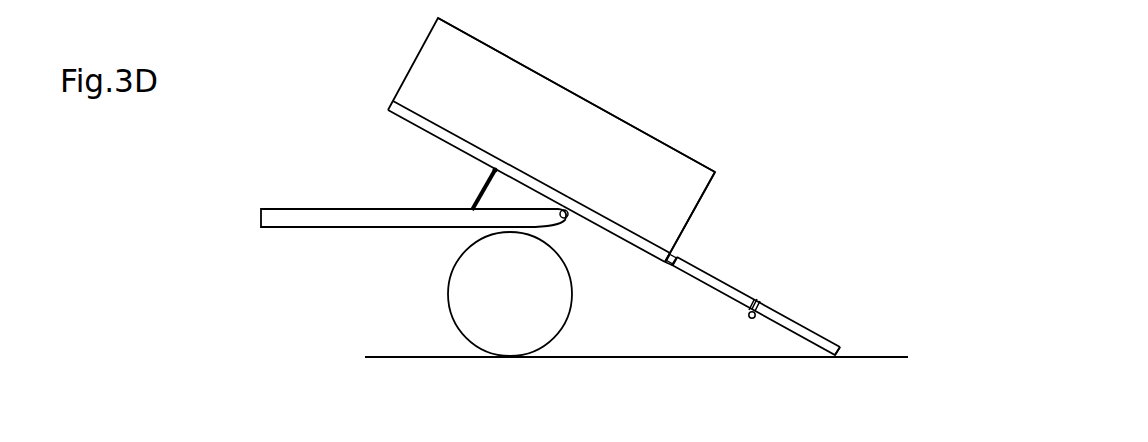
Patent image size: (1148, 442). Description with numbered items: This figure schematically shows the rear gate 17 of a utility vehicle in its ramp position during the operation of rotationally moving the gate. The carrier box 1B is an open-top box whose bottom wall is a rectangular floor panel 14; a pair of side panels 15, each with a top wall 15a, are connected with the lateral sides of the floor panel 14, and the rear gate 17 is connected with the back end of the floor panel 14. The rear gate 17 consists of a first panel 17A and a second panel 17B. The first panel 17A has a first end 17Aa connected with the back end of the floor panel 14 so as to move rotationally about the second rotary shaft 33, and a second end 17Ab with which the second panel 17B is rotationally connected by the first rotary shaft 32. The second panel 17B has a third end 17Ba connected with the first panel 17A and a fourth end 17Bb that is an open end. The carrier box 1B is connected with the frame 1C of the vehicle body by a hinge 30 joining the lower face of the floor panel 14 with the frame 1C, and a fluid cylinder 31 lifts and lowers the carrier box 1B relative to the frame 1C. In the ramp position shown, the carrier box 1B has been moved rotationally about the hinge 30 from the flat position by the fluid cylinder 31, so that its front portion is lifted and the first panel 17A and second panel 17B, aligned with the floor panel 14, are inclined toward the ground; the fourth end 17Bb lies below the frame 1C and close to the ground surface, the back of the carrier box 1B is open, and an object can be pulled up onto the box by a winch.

The carrier box 1B is at (413, 63).
The top wall 15a is at (580, 97).
The side panel 15 is at (615, 135).
The floor panel 14 is at (427, 132).
The hinge 30 is at (567, 205).
The fluid cylinder 31 is at (478, 186).
The frame 1C is at (322, 217).
The second rotary shaft 33 is at (675, 248).
The third end 17Ba is at (752, 303).
The rear gate 17 is at (798, 252).
The first end 17Aa is at (653, 257).
The first panel 17A is at (688, 271).
The first rotary shaft 32 is at (748, 316).
The second end 17Ab is at (808, 297).
The second panel 17B is at (810, 332).
The fourth end 17Bb is at (843, 347).